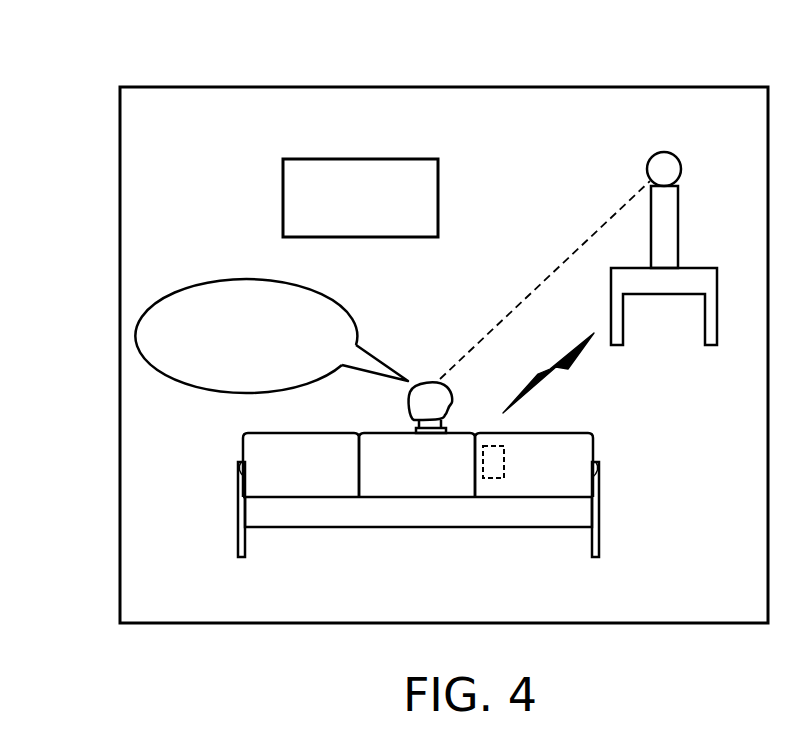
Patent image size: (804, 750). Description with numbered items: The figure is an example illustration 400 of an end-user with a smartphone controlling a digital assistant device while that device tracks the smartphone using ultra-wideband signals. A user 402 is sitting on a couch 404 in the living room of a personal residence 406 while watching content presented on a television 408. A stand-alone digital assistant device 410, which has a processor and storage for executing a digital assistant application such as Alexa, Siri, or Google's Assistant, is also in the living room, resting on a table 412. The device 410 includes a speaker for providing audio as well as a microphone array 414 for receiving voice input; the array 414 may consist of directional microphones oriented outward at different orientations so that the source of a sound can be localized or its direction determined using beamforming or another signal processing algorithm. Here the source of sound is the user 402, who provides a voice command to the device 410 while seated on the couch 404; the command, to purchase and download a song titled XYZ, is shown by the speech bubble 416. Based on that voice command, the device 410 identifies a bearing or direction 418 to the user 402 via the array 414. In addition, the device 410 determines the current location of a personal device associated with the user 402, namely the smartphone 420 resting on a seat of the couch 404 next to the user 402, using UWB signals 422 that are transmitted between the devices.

The example illustration 400 is at (100, 56).
The user 402 is at (407, 397).
The couch 404 is at (238, 497).
The personal residence 406 is at (120, 157).
The television 408 is at (283, 198).
The stand-alone digital assistant device 410 is at (678, 228).
The table 412 is at (611, 305).
The microphone array 414 is at (647, 171).
The speech bubble 416 is at (238, 278).
The direction 418 is at (537, 283).
The smartphone 420 is at (505, 462).
The UWB signals 422 is at (560, 373).